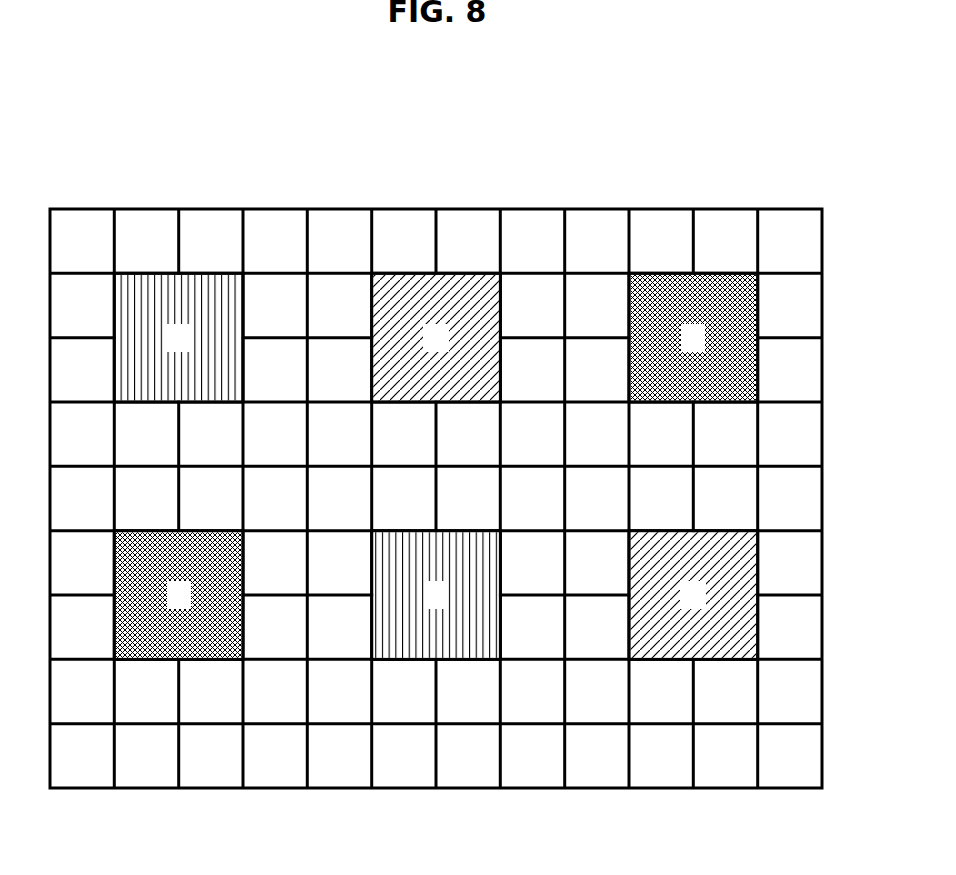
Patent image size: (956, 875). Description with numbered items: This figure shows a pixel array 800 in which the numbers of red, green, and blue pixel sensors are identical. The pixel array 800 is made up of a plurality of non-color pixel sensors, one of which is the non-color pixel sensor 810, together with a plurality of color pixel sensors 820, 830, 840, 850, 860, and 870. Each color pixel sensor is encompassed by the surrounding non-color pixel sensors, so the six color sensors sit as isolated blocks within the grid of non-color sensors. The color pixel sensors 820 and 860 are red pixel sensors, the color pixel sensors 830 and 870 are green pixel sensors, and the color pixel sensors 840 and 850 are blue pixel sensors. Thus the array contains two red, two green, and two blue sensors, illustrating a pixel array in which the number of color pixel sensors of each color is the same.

The pixel array 800 is at (413, 115).
The non-color pixel sensor 810 is at (77, 220).
The color pixel sensor 820 is at (188, 288).
The color pixel sensor 830 is at (445, 288).
The color pixel sensor 840 is at (703, 288).
The color pixel sensor 850 is at (190, 650).
The color pixel sensor 860 is at (447, 650).
The color pixel sensor 870 is at (703, 652).